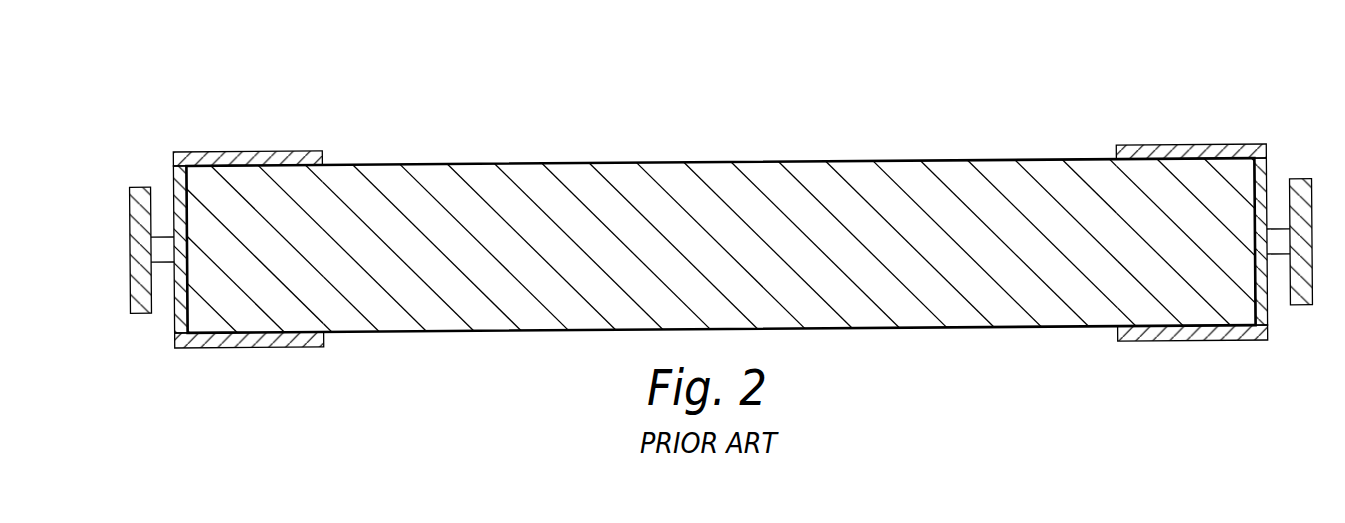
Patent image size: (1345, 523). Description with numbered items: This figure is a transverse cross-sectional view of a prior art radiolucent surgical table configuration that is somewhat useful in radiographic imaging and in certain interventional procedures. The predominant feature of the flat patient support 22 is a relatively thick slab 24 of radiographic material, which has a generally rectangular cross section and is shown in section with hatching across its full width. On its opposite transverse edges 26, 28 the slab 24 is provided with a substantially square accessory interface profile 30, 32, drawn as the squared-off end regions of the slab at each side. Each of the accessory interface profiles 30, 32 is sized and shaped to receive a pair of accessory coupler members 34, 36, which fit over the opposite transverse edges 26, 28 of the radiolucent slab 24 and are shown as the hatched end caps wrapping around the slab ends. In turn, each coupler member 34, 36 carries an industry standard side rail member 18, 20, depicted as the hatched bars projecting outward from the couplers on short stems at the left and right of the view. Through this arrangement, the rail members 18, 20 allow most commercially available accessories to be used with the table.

The side rail member 18 is at (130, 195).
The side rail member 20 is at (1303, 304).
The flat patient support 22 is at (900, 161).
The slab 24 is at (478, 305).
The transverse edge 26 is at (220, 135).
The transverse edge 28 is at (1180, 122).
The accessory interface profile 30 is at (233, 197).
The accessory interface profile 32 is at (1210, 195).
The accessory coupler member 34 is at (229, 345).
The accessory coupler member 36 is at (1268, 153).